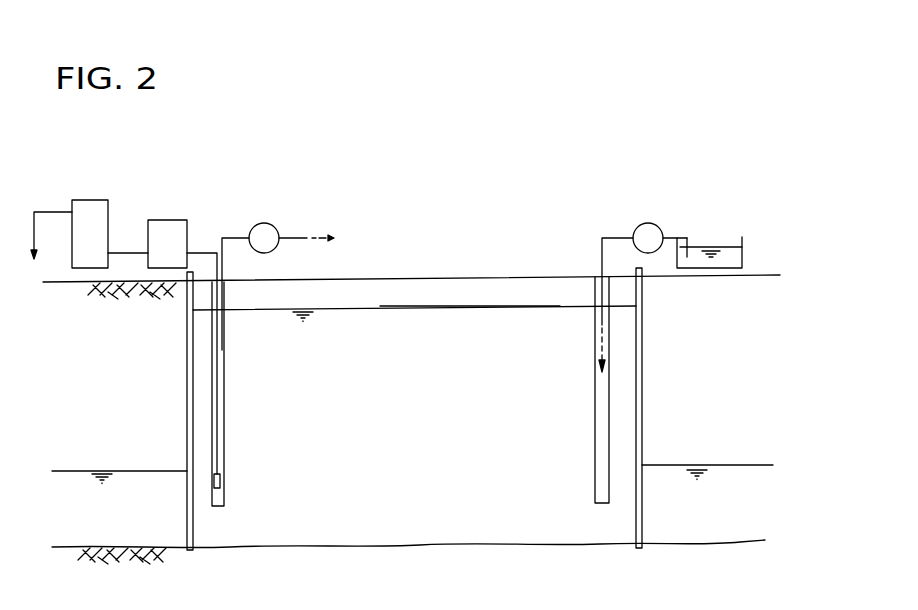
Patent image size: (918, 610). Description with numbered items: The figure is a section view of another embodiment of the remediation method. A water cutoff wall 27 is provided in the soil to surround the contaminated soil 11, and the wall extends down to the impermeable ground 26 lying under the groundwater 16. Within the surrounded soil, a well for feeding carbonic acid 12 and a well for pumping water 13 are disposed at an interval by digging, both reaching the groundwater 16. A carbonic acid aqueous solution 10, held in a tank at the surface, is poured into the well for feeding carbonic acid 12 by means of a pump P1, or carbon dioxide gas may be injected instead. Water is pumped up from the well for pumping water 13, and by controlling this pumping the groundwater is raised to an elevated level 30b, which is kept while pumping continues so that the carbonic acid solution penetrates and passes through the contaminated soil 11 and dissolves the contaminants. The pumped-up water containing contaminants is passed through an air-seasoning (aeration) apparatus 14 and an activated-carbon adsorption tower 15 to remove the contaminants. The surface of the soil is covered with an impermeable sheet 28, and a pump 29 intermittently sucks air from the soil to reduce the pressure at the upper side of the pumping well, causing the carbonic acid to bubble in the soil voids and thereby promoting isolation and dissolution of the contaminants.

The carbonic acid aqueous solution 10 is at (735, 250).
The contaminated soil 11 is at (395, 290).
The well for feeding carbonic acid 12 is at (594, 446).
The well for pumping water 13 is at (225, 432).
The air-seasoning (aeration) apparatus 14 is at (172, 228).
The activated-carbon adsorption tower 15 is at (86, 210).
The groundwater 16 is at (145, 480).
The impermeable ground 26 is at (80, 546).
The water cutoff wall 27 is at (187, 352).
The impermeable sheet 28 is at (485, 278).
The pump 29 is at (266, 223).
The elevated level of the groundwater 30b is at (552, 332).
The pump P1 is at (640, 223).